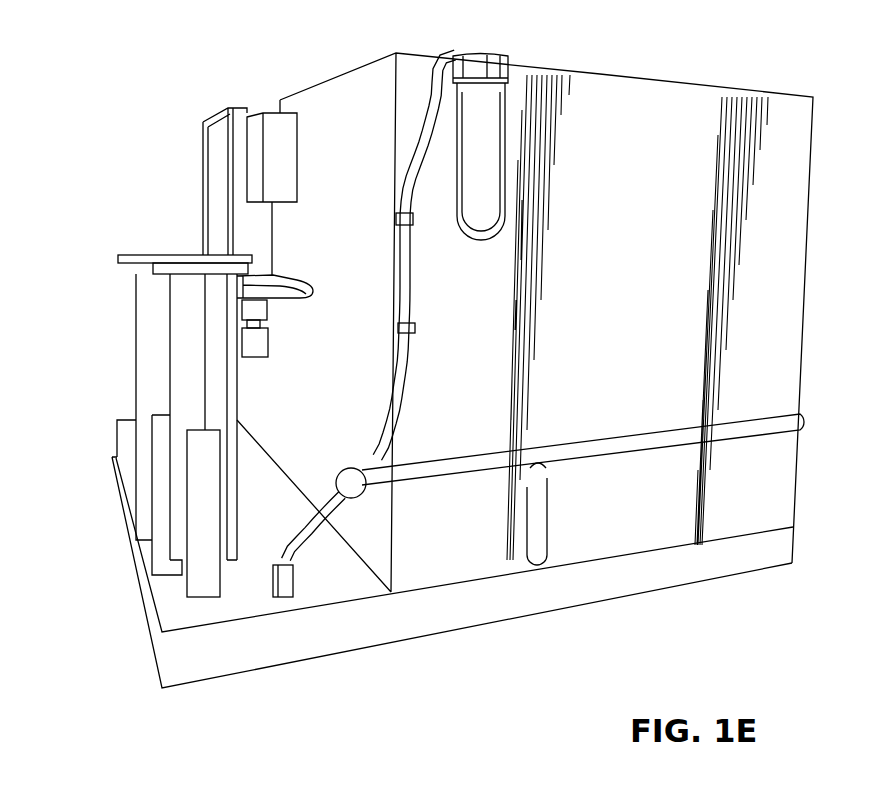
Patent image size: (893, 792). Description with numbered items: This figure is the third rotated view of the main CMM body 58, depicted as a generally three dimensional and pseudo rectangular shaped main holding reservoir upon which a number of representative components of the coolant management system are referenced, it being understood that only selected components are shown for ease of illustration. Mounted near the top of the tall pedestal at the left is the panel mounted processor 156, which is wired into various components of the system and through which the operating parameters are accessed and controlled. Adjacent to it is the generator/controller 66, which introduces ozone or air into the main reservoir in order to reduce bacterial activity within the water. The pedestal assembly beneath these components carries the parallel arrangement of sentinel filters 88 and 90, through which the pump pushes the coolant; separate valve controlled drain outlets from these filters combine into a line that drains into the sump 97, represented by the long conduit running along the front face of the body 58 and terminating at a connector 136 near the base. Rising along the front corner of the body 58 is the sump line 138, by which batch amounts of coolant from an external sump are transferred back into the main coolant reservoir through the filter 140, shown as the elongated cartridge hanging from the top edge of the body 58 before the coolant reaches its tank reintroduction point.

The three dimensional body 58 is at (606, 297).
The generator/controller 66 is at (287, 160).
The sentinel filter 88 is at (135, 355).
The sentinel filter 90 is at (135, 385).
The sump 97 is at (293, 557).
The connector 136 is at (285, 597).
The sump line 138 is at (413, 340).
The filter 140 is at (492, 193).
The panel mounted processor 156 is at (213, 220).